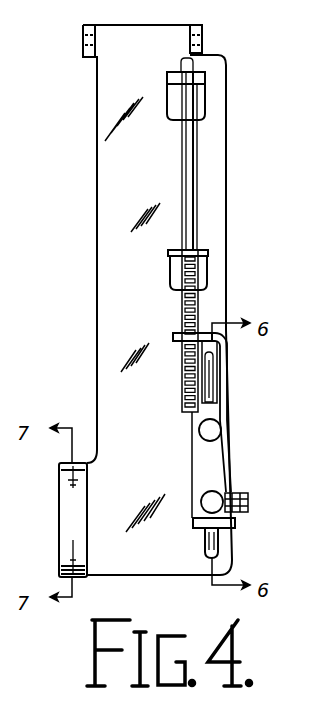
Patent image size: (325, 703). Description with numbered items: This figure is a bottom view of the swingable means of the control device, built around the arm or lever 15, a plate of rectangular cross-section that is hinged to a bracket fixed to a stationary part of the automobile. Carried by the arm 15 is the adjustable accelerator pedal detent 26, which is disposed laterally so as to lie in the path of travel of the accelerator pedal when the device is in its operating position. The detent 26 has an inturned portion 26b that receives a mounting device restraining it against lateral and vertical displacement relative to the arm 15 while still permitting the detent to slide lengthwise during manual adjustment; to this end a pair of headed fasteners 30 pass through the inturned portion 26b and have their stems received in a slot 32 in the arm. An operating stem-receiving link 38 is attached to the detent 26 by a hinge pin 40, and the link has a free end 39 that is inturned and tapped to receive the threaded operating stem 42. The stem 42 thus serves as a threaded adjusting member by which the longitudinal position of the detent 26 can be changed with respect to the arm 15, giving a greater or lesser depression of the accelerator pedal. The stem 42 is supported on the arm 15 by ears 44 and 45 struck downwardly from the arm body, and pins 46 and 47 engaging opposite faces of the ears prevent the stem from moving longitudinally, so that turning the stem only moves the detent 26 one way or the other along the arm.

The arm or lever 15 is at (97, 258).
The adjustable accelerator pedal detent 26 is at (233, 448).
The inturned portion 26b is at (200, 462).
The headed fasteners 30 is at (199, 430).
The slot 32 is at (215, 386).
The operating stem-receiving link 38 is at (222, 365).
The free end 39 is at (176, 335).
The hinge pin 40 is at (249, 500).
The threaded operating stem 42 is at (187, 190).
The ear 44 is at (205, 254).
The ear 45 is at (206, 78).
The pin 46 is at (198, 247).
The pin 47 is at (193, 102).